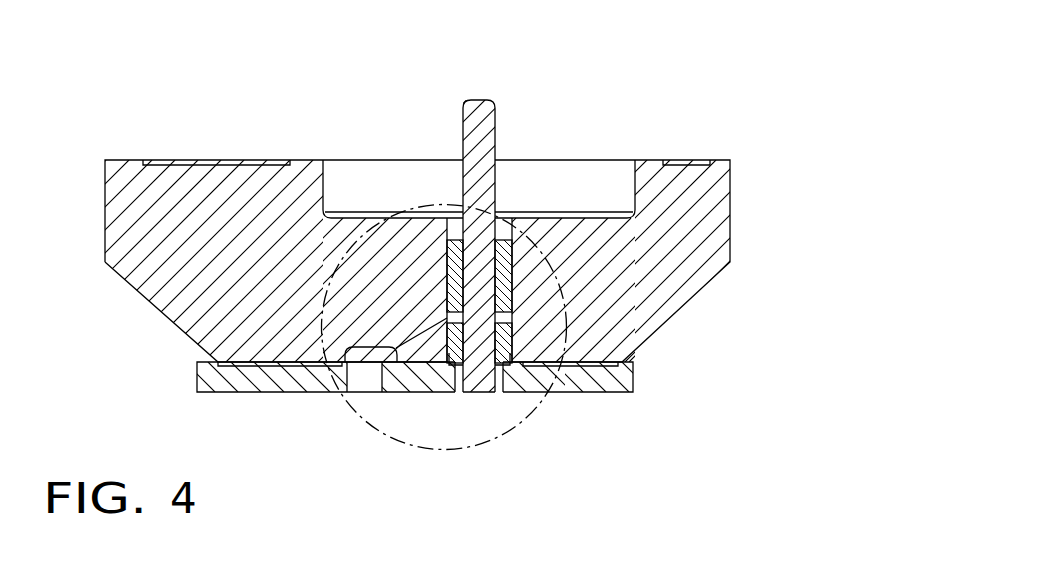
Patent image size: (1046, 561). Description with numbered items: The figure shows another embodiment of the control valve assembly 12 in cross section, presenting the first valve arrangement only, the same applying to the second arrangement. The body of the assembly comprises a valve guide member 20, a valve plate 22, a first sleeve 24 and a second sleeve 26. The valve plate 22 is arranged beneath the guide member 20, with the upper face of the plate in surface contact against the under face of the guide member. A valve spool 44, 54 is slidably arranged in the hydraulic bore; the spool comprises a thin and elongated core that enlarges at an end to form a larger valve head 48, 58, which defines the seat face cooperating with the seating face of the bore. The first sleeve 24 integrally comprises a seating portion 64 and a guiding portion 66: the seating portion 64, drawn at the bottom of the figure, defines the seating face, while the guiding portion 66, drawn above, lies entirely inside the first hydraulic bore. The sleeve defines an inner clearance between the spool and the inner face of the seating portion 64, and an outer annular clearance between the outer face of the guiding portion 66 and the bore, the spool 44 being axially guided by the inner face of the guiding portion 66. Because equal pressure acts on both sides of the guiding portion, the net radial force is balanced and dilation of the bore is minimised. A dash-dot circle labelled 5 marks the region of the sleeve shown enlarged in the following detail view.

The control valve assembly 12 is at (713, 85).
The valve guide member 20 is at (730, 192).
The valve plate 22 is at (633, 378).
The first valve spool 44 is at (478, 268).
The second valve spool 54 is at (497, 128).
The valve head 48 is at (500, 447).
The valve head 58 is at (468, 363).
The first sleeve 24 is at (447, 398).
The second sleeve 26 is at (415, 495).
The guiding portion 66 is at (447, 260).
The seating portion 64 is at (452, 353).
The detail circle for FIG. 5 is at (530, 427).